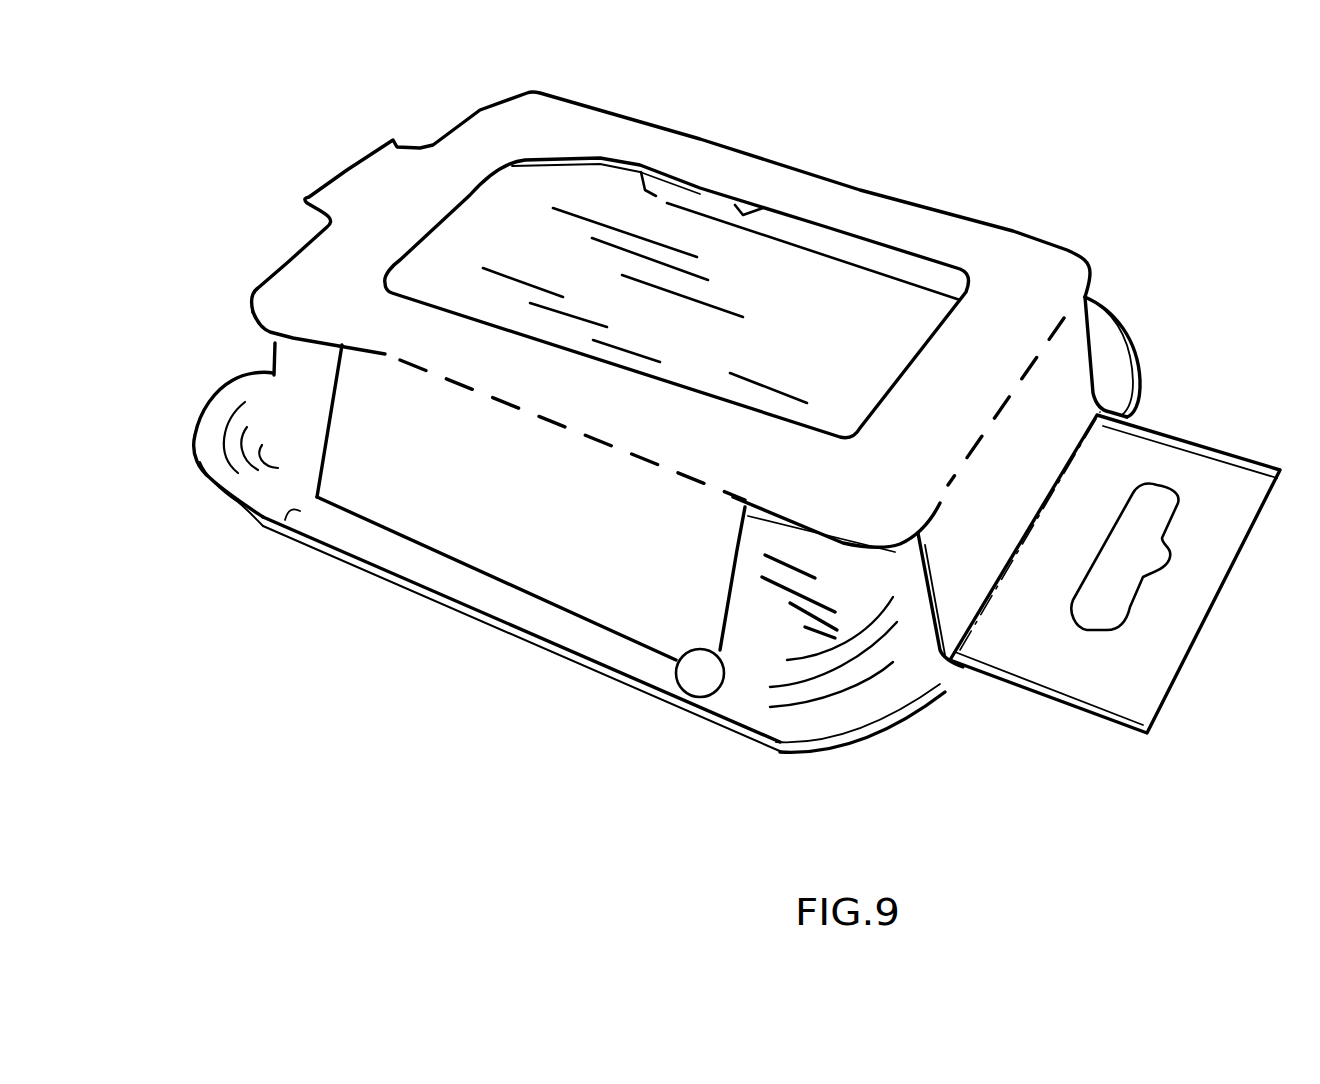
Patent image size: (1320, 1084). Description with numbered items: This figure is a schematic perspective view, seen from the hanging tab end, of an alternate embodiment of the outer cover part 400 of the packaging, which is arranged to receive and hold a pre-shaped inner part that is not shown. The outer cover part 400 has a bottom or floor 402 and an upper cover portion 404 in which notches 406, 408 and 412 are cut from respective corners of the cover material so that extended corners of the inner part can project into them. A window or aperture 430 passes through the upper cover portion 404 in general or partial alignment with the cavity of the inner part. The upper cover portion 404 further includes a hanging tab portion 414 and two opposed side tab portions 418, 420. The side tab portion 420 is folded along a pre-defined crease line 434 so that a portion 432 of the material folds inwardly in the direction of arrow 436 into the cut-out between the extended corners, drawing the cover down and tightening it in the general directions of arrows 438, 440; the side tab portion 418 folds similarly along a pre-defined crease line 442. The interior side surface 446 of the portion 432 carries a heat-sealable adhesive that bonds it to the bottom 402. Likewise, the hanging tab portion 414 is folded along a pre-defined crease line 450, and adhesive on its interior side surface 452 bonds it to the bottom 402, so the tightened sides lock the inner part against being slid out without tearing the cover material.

The outer cover part 400 is at (1062, 168).
The bottom or floor 402 is at (910, 696).
The upper cover portion 404 is at (1032, 273).
The notch 406 is at (753, 607).
The notch 408 is at (1102, 331).
The notch 412 is at (295, 379).
The hanging tab portion 414 is at (1076, 388).
The side tab portion 418 is at (767, 211).
The side tab portion 420 is at (345, 458).
The window or aperture 430 is at (864, 290).
The portion of the material 432 is at (547, 627).
The pre-defined crease line 434 is at (454, 395).
The arrow 436 is at (641, 662).
The arrow 438 is at (693, 505).
The arrow 440 is at (327, 500).
The pre-defined crease line 442 is at (700, 210).
The interior side surface 446 is at (703, 651).
The pre-defined crease line 450 is at (1135, 415).
The interior side surface 452 is at (952, 698).